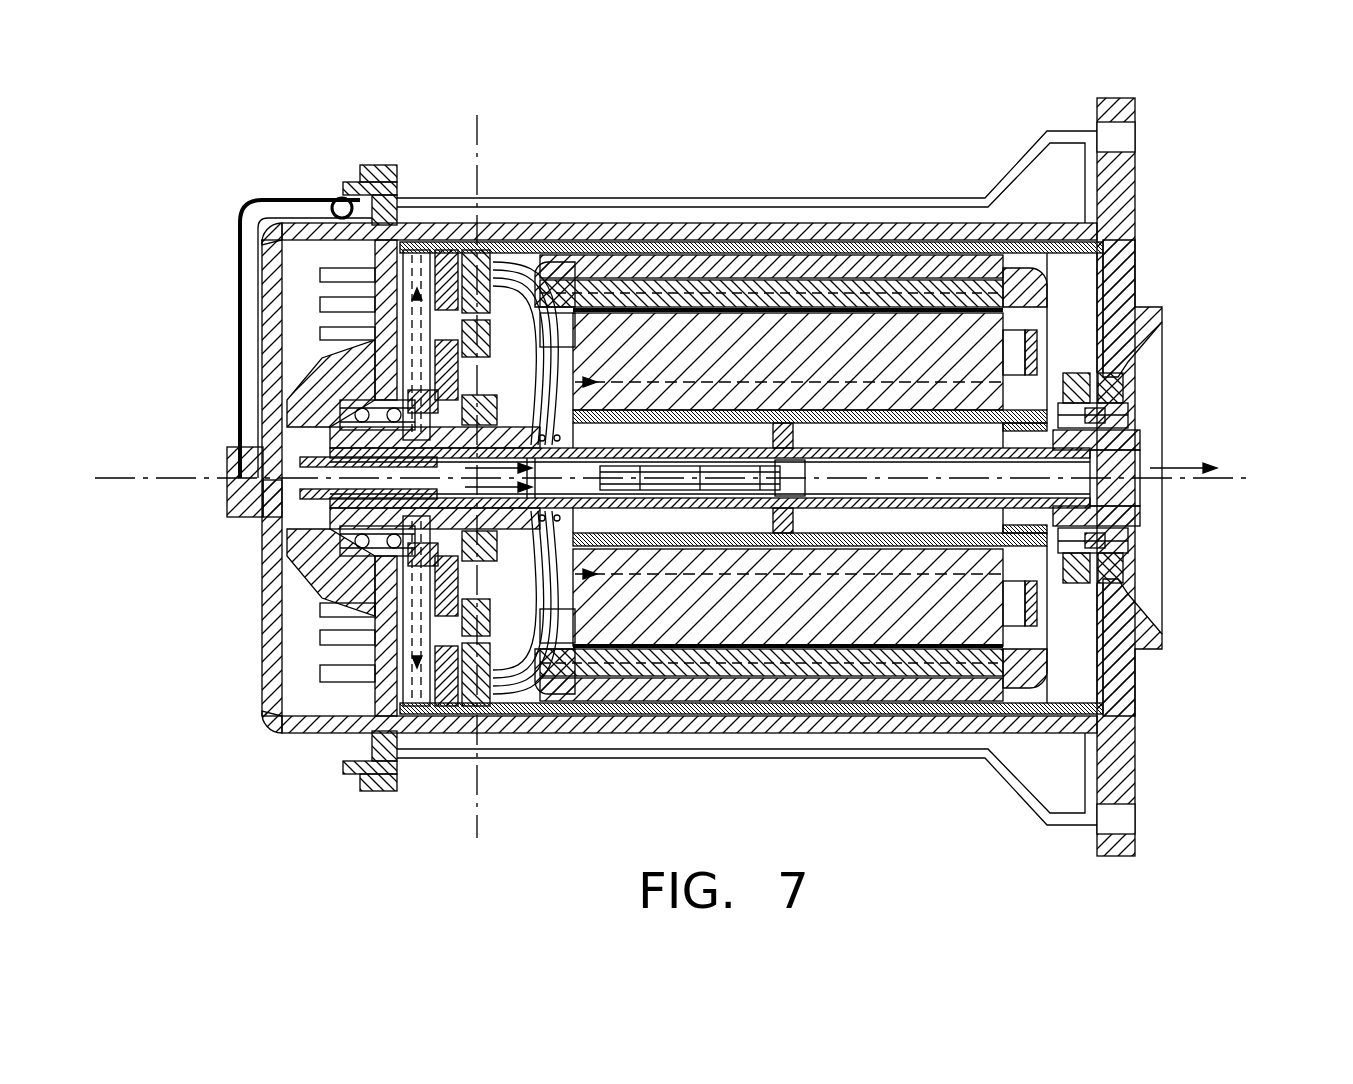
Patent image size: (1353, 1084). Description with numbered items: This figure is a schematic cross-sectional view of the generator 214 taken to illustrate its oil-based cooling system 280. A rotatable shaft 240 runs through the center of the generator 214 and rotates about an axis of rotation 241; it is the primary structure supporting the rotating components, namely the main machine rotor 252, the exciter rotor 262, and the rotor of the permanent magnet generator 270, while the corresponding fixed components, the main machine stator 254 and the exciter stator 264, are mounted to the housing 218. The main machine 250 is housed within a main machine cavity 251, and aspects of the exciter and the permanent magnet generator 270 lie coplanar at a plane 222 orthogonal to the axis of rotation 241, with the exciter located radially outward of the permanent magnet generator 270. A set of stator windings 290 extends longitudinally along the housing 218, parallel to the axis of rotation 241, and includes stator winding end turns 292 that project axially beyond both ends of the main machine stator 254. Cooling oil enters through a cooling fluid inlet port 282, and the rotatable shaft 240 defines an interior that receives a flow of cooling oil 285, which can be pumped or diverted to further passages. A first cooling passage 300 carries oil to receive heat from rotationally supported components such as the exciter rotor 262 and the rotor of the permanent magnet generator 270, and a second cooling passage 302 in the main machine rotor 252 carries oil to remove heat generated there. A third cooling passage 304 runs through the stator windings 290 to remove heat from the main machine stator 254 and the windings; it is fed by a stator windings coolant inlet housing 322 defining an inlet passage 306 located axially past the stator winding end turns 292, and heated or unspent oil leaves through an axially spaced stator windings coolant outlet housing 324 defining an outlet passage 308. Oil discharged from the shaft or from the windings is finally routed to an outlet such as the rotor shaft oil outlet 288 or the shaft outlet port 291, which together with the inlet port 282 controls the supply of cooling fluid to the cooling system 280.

The generator 214 is at (766, 150).
The housing 218 is at (920, 236).
The plane 222 is at (477, 808).
The rotatable shaft 240 is at (1146, 418).
The axis of rotation 241 is at (173, 480).
The main machine 250 is at (808, 252).
The main machine cavity 251 is at (1052, 297).
The main machine rotor 252 is at (978, 338).
The main machine stator 254 is at (812, 240).
The exciter rotor 262 is at (473, 335).
The exciter stator 264 is at (487, 273).
The permanent magnet generator 270 is at (445, 388).
The cooling system 280 is at (297, 841).
The cooling fluid inlet port 282 is at (300, 203).
The flow of cooling oil 285 is at (240, 441).
The rotor shaft oil outlet 288 is at (1196, 483).
The stator windings 290 is at (730, 292).
The shaft outlet port 291 is at (1151, 452).
The stator winding end turns 292 is at (560, 262).
The first cooling passage 300 is at (553, 385).
The second cooling passage 302 is at (665, 573).
The third cooling passage 304 is at (682, 255).
The inlet passage 306 is at (420, 267).
The outlet passage 308 is at (450, 277).
The stator windings coolant inlet housing 322 is at (425, 279).
The stator windings coolant outlet housing 324 is at (443, 272).